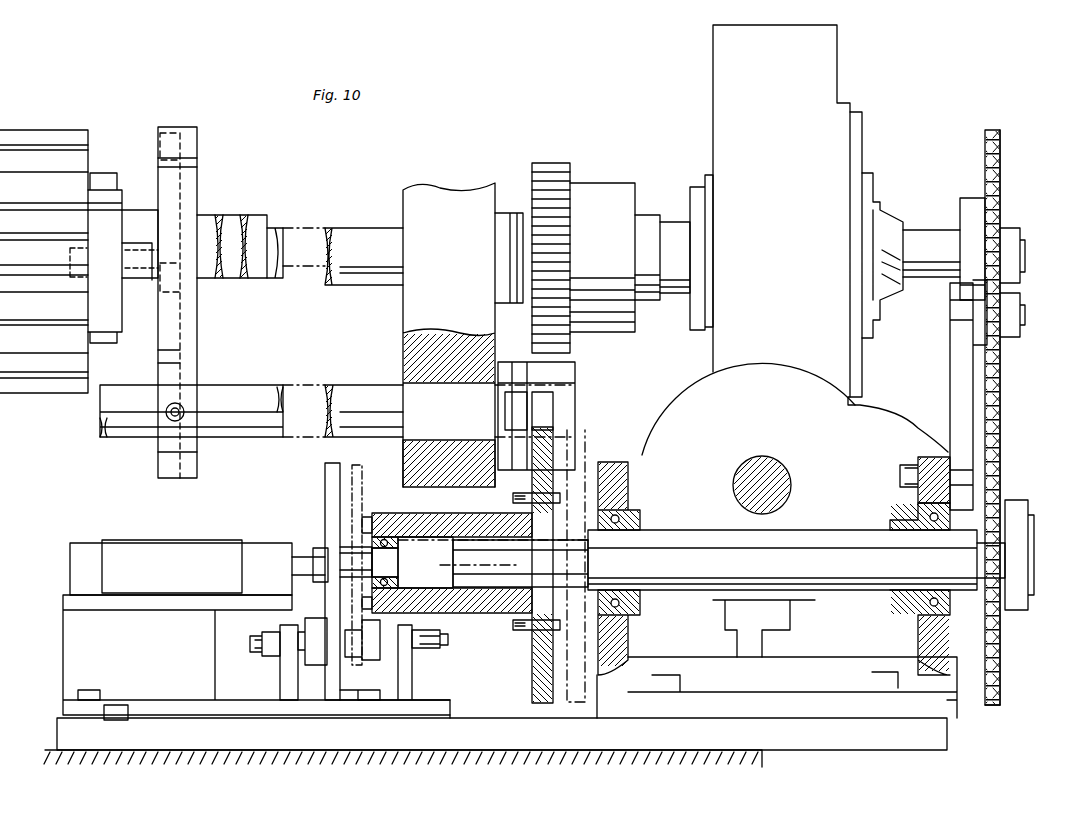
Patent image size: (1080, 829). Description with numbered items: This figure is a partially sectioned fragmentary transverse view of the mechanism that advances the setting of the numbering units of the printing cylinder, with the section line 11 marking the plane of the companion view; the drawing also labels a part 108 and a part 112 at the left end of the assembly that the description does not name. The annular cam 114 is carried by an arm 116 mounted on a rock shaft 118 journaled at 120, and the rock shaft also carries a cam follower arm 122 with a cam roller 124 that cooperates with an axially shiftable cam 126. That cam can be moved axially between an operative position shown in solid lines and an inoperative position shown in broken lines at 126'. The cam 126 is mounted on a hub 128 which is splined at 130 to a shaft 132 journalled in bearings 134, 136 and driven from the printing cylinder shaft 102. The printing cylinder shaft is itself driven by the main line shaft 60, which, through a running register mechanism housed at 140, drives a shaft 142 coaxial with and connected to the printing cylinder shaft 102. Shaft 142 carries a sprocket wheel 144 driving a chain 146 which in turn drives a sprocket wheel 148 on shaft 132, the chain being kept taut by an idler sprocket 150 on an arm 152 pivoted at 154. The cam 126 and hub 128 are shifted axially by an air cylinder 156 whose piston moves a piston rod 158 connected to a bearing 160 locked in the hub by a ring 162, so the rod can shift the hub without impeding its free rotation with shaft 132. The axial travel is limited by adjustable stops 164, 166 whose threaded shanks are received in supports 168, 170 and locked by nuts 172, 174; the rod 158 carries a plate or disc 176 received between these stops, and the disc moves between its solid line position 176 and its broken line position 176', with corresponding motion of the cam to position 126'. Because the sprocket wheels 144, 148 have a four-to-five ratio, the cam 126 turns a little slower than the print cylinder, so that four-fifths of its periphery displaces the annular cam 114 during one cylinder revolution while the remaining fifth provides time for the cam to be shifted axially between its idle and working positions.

The section line 11- 11 is at (157, 110).
The main line shaft 60 is at (780, 470).
The printing cylinder shaft 102 is at (215, 216).
The motor boss 108 is at (144, 305).
The keyway 112 is at (158, 145).
The annular cam 114 is at (198, 137).
The arm 116 is at (198, 364).
The rock shaft 118 is at (270, 386).
The journal 120 is at (403, 380).
The cam follower arm 122 is at (530, 373).
The cam roller 124 is at (553, 413).
The axially shiftable cam 126 is at (530, 565).
The inoperative position of cam 126' is at (601, 563).
The hub 128 is at (445, 514).
The spline 130 is at (460, 554).
The shaft 132 is at (830, 527).
The bearing 134 is at (630, 606).
The bearing 136 is at (917, 603).
The running register mechanism housing 140 is at (826, 73).
The shaft 142 is at (923, 229).
The sprocket wheel 144 is at (995, 130).
The chain 146 is at (1002, 426).
The sprocket wheel 148 is at (995, 706).
The idler sprocket 150 is at (1003, 292).
The arm 152 is at (950, 373).
The pivot 154 is at (900, 470).
The air cylinder 156 is at (200, 540).
The piston rod 158 is at (300, 556).
The bearing 160 is at (394, 575).
The ring 162 is at (365, 516).
The adjustable stop 164 is at (320, 660).
The adjustable stop 166 is at (370, 697).
The support 168 is at (282, 660).
The support 170 is at (408, 677).
The lock nut 172 is at (264, 642).
The lock nut 174 is at (436, 646).
The plate or disc 176 is at (321, 569).
The broken-line position of disc 176' is at (370, 552).